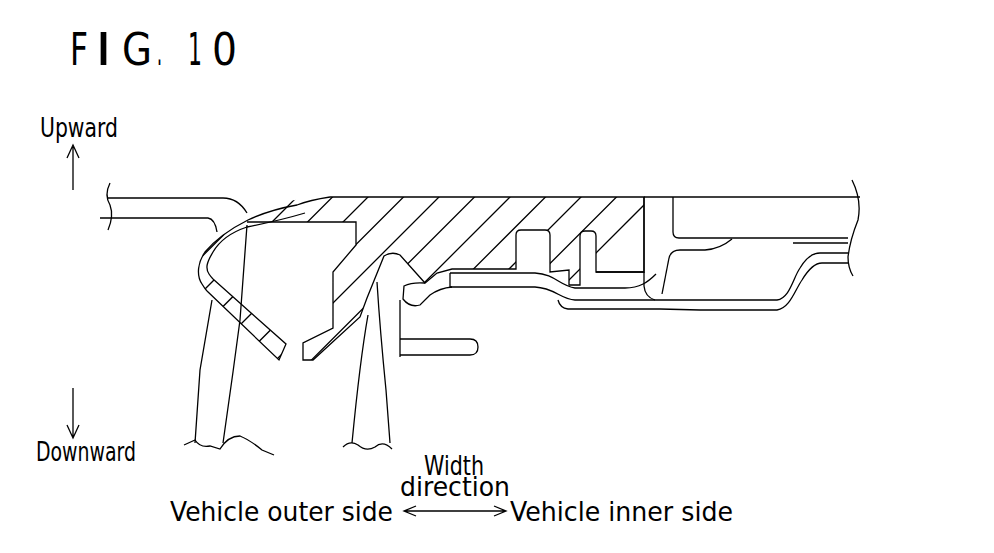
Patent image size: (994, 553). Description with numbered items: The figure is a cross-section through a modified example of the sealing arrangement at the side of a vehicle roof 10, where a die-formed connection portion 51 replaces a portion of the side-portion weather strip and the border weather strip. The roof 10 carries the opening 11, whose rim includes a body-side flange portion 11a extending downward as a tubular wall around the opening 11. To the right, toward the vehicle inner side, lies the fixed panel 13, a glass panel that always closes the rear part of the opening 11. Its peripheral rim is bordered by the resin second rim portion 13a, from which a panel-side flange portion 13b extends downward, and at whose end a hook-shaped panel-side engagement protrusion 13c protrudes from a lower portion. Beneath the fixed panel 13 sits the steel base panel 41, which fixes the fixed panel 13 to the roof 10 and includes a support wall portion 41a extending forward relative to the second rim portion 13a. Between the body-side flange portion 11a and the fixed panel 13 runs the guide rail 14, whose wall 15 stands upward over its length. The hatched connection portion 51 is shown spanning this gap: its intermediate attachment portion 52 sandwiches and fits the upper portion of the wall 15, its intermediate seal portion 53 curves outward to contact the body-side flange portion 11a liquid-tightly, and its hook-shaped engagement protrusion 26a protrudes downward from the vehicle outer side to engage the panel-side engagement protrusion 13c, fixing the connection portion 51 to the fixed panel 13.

The roof 10 is at (157, 197).
The opening 11 is at (267, 229).
The body-side flange portion 11a is at (255, 448).
The fixed panel 13 is at (774, 197).
The second rim portion 13a is at (673, 210).
The panel-side flange portion 13b is at (629, 282).
The panel-side engagement protrusion 13c is at (568, 308).
The guide rail 14 is at (437, 365).
The wall 15 is at (397, 400).
The engagement protrusion 26a is at (623, 205).
The base panel 41 is at (777, 318).
The support wall portion 41a is at (530, 289).
The connection portion 51 is at (496, 196).
The intermediate attachment portion 52 is at (450, 288).
The intermediate seal portion 53 is at (197, 268).